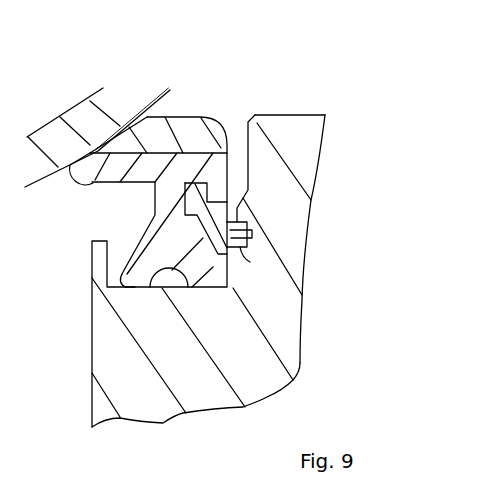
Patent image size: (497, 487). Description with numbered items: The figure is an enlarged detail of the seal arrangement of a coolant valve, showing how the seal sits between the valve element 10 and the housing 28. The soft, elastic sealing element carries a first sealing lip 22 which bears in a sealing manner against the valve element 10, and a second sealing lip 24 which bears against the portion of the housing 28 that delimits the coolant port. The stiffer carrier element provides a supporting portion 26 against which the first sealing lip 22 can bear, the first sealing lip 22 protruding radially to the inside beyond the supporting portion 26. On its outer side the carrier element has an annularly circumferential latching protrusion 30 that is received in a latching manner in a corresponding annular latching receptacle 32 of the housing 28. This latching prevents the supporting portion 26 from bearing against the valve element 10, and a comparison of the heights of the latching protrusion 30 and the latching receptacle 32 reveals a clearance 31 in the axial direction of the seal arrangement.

The valve element 10 is at (83, 128).
The first sealing lip 22 is at (77, 188).
The second sealing lip 24 is at (135, 278).
The supporting portion 26 is at (177, 130).
The housing 28 is at (275, 322).
The latching protrusion 30 is at (250, 232).
The clearance 31 is at (252, 233).
The latching receptacle 32 is at (242, 250).